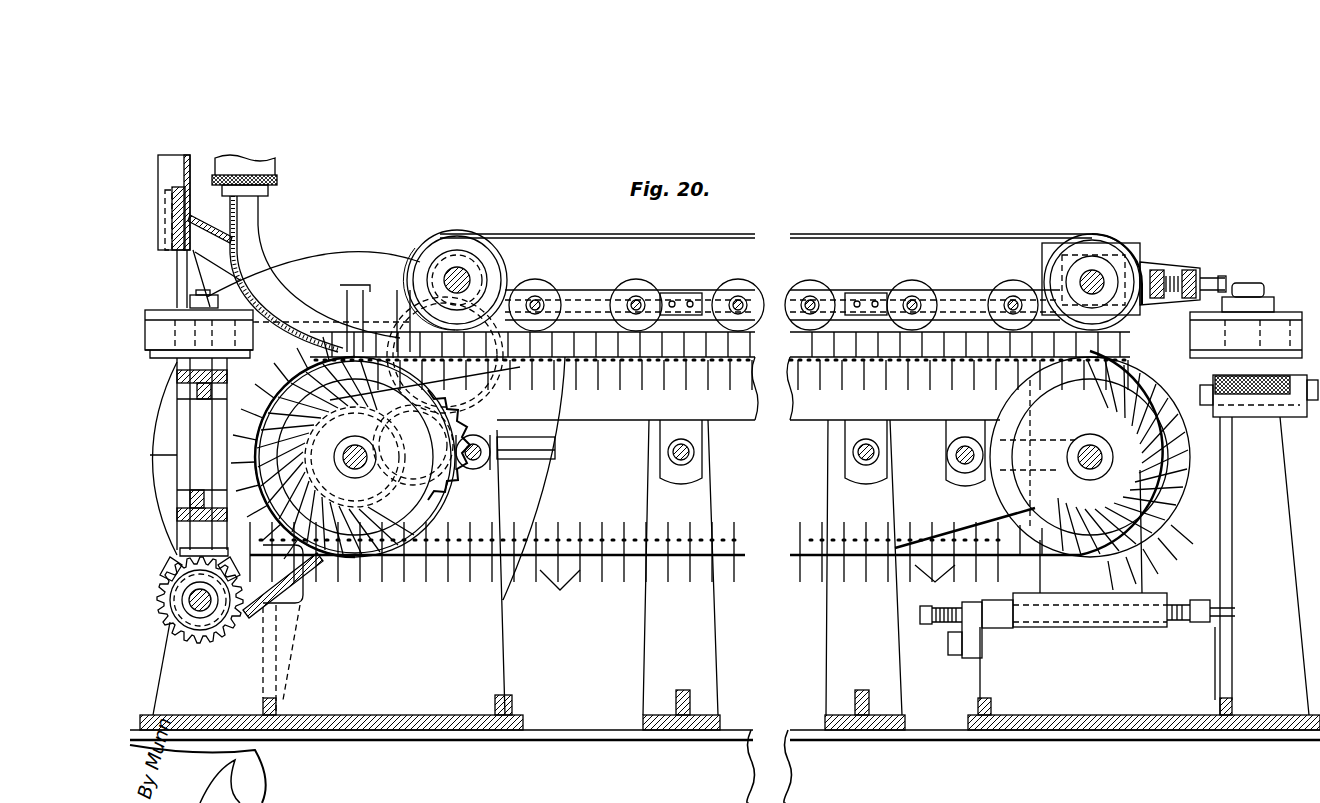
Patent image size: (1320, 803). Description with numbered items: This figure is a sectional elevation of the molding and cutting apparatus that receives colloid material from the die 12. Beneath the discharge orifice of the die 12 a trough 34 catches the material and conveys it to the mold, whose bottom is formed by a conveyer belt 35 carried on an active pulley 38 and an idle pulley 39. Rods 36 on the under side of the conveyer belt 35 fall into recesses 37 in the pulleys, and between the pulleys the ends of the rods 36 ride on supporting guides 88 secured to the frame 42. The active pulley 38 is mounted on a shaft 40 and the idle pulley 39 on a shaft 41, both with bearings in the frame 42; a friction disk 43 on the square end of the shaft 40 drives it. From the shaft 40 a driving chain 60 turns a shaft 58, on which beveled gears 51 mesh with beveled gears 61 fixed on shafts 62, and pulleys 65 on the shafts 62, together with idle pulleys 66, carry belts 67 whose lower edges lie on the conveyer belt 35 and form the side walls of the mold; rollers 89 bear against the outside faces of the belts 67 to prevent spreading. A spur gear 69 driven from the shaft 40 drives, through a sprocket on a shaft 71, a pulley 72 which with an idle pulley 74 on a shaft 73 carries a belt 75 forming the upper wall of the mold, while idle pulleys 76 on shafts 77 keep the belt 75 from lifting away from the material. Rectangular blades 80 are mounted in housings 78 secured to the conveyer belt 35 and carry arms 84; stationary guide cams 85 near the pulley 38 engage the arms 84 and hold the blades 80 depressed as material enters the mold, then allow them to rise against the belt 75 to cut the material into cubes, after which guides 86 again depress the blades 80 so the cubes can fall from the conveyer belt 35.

The die 12 is at (262, 190).
The trough 34 is at (258, 262).
The conveyer belt 35 is at (648, 390).
The rods 36 is at (706, 453).
The recesses 37 is at (476, 468).
The active pulley 38 is at (355, 457).
The idle pulley 39 is at (1090, 457).
The shaft 40 is at (366, 458).
The shaft 41 is at (1080, 456).
The frame 42 is at (170, 712).
The friction disk 43 is at (556, 446).
The beveled gears 51 is at (224, 637).
The shaft 58 is at (202, 611).
The driving chain 60 is at (290, 580).
The beveled gears 61 is at (166, 562).
The shafts 62 is at (202, 457).
The pulleys 65 is at (158, 362).
The idle pulleys 66 is at (1270, 318).
The belts 67 is at (723, 334).
The spur gear 69 is at (498, 430).
The shaft 71 is at (475, 282).
The pulley 72 is at (490, 260).
The shaft 73 is at (1085, 282).
The idle pulley 74 is at (1042, 250).
The belt 75 is at (540, 234).
The idle pulleys 76 is at (636, 295).
The shafts 77 is at (640, 304).
The housings 78 is at (660, 528).
The blades 80 is at (747, 588).
The arms 84 is at (580, 390).
The stationary guide cams 85 is at (280, 392).
The guides 86 is at (1165, 522).
The supporting guides 88 is at (720, 376).
The rollers 89 is at (782, 302).